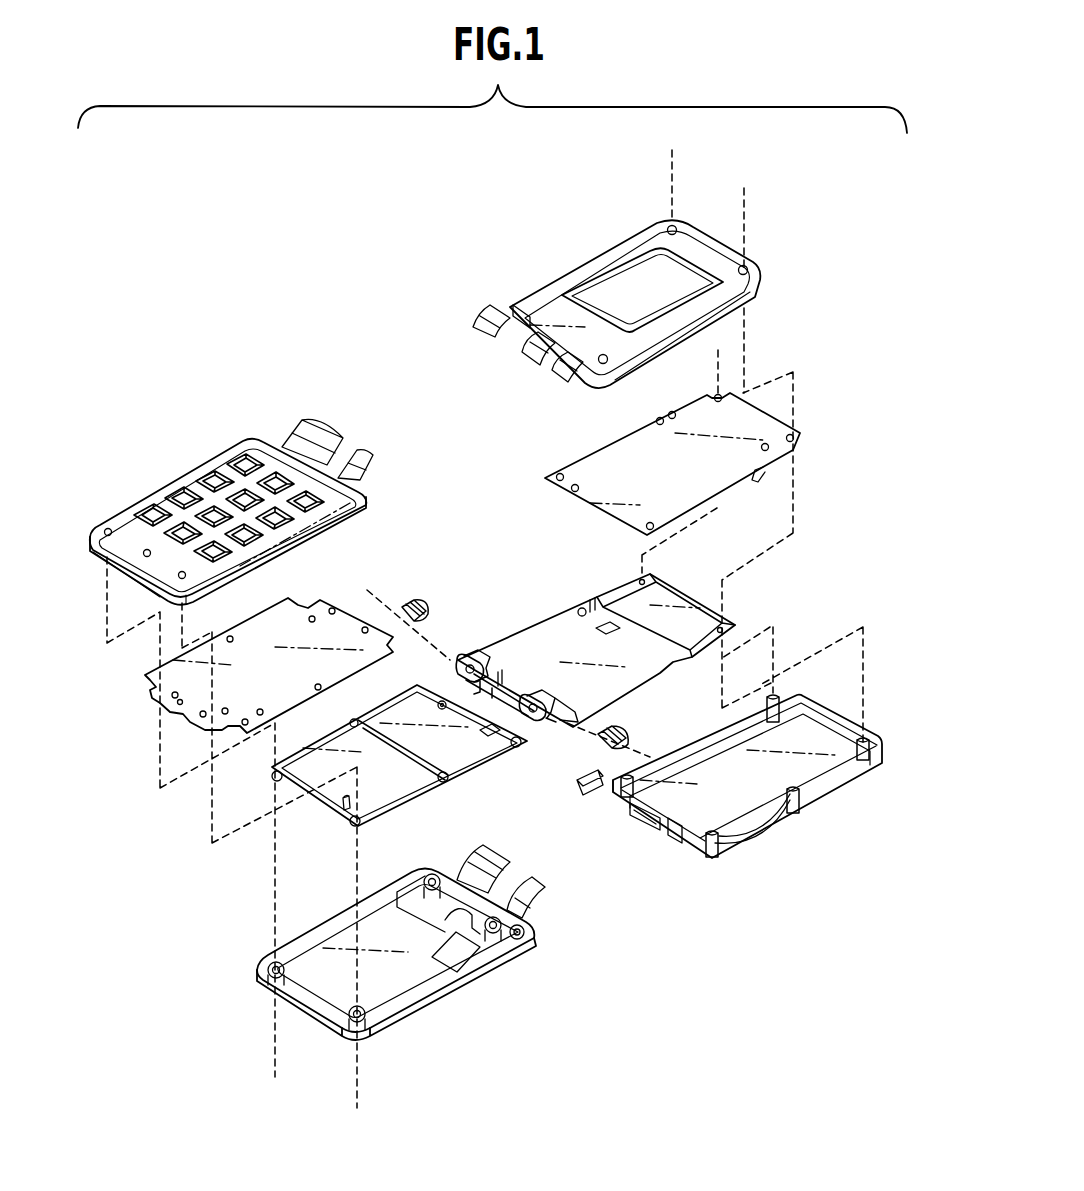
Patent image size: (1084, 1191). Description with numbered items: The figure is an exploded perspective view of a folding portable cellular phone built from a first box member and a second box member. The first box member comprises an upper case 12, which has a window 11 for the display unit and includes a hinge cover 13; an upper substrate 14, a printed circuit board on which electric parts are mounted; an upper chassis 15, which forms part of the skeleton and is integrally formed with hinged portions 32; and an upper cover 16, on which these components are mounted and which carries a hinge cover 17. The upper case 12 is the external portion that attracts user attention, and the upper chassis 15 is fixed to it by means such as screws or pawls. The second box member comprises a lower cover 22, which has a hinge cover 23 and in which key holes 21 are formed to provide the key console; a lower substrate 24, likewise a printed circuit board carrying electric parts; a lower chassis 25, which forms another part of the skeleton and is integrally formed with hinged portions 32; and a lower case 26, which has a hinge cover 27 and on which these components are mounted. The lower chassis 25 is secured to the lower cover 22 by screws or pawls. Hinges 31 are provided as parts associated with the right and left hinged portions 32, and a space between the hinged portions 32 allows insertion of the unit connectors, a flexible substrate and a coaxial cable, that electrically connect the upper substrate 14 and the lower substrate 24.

The window 11 is at (630, 275).
The upper case 12 is at (540, 298).
The hinge cover 13 is at (485, 318).
The upper substrate 14 is at (608, 456).
The upper chassis 15 is at (604, 688).
The upper cover 16 is at (714, 858).
The hinge cover 17 is at (637, 826).
The key holes 21 is at (180, 497).
The lower cover 22 is at (262, 438).
The hinge cover 23 is at (316, 433).
The lower substrate 24 is at (314, 607).
The lower chassis 25 is at (470, 758).
The lower case 26 is at (498, 935).
The hinge cover 27 is at (496, 866).
The hinges 31 is at (414, 606).
The hinged portions 32 is at (540, 694).